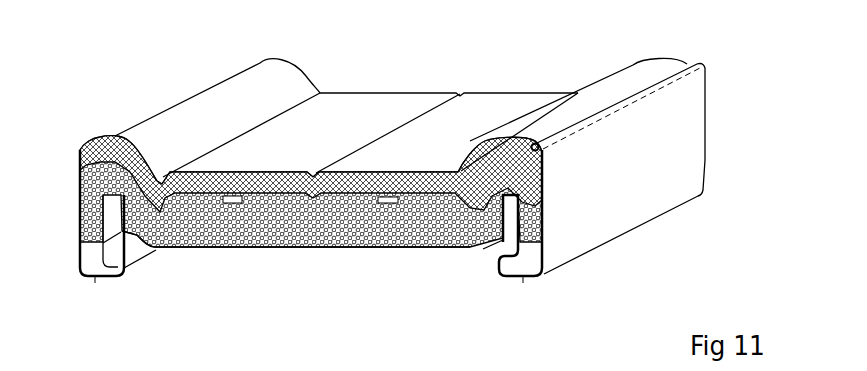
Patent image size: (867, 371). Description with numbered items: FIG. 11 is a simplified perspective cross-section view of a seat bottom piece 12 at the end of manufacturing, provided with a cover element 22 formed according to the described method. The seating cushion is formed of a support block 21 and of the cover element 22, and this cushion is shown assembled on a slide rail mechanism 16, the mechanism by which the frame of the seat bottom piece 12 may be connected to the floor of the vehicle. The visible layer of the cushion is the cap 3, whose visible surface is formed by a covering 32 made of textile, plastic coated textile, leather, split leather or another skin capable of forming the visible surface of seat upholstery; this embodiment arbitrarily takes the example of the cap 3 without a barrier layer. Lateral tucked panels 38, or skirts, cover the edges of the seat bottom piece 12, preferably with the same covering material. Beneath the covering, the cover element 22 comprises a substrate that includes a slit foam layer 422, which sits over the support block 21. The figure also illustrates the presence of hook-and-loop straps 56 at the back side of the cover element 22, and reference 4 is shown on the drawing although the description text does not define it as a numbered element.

The seat bottom piece 12 is at (445, 187).
The cover element 22 is at (383, 178).
The covering 32 is at (505, 100).
The lateral tucked panels 38 is at (687, 137).
The cap 3 is at (398, 170).
The fastening strip 4 is at (255, 170).
The support block 21 is at (383, 247).
The hook-and-loop straps 56 is at (227, 247).
The slit foam layer 422 is at (156, 248).
The slide rail mechanism 16 is at (142, 240).